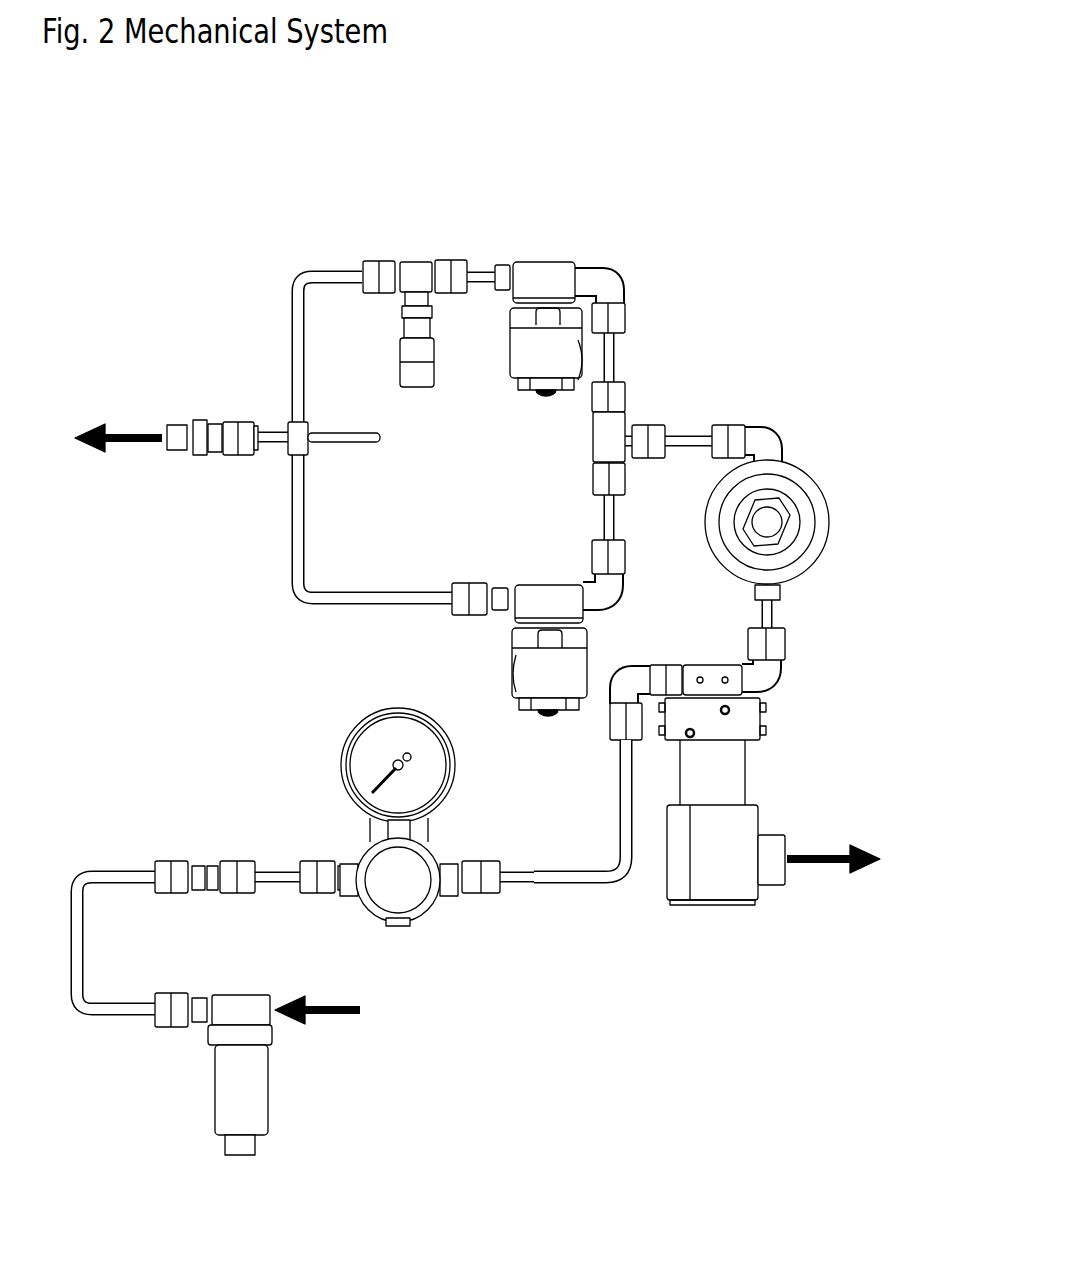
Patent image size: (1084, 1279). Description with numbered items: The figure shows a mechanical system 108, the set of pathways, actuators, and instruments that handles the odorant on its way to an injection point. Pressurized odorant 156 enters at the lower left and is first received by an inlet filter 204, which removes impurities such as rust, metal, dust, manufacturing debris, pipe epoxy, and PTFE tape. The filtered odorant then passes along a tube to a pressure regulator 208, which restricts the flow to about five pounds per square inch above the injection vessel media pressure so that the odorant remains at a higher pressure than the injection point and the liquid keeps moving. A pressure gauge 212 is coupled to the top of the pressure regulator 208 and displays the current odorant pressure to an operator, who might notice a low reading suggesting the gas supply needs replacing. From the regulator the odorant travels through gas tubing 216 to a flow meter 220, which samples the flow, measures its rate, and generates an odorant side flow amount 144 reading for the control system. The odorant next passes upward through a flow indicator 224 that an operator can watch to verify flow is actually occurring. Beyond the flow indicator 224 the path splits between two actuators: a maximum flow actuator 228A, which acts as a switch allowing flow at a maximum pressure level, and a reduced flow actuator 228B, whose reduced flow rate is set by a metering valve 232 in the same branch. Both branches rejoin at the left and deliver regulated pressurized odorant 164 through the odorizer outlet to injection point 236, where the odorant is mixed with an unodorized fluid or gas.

The mechanical system 108 is at (892, 98).
The metering valve 232 is at (418, 370).
The reduced flow actuator 228B is at (541, 345).
The odorizer outlet to injection point 236 is at (240, 428).
The regulated pressurized odorant 164 is at (138, 466).
The flow indicator 224 is at (768, 520).
The maximum flow actuator 228A is at (538, 678).
The pressure gauge 212 is at (372, 752).
The pressure regulator 208 is at (387, 880).
The flow meter 220 is at (722, 840).
The odorant side flow amount 144 is at (865, 888).
The gas tubing 216 is at (566, 878).
The pressurized odorant 156 is at (355, 1030).
The inlet filter 204 is at (242, 1100).